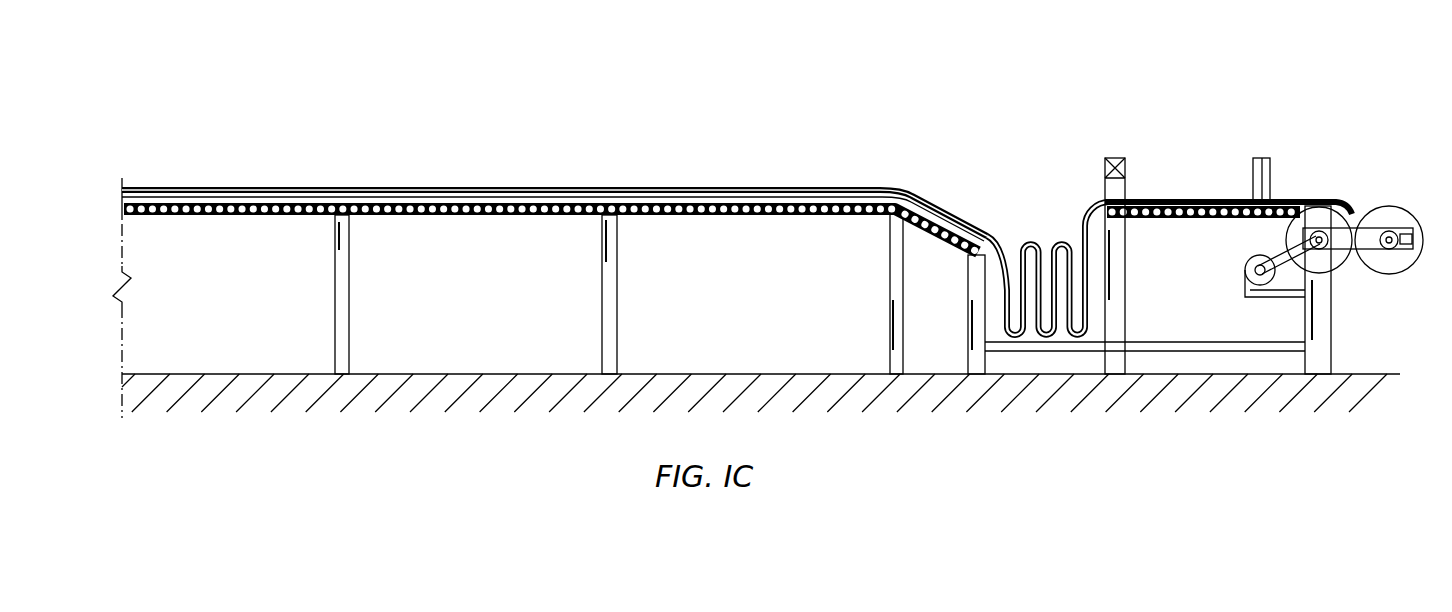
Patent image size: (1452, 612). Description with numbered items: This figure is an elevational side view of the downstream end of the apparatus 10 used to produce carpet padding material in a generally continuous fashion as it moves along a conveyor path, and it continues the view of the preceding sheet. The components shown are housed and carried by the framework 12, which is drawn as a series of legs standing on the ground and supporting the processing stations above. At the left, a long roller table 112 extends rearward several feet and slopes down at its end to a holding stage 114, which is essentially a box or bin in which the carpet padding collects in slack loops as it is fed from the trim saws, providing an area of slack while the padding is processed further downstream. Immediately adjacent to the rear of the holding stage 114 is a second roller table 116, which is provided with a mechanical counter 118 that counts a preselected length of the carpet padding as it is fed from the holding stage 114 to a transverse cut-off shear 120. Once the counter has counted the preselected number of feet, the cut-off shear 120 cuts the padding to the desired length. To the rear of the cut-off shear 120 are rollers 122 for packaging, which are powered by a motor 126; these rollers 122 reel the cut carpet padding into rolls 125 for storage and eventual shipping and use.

The apparatus 10 is at (593, 128).
The framework 12 is at (612, 302).
The roller table 112 is at (647, 202).
The holding stage 114 is at (1045, 238).
The second roller table 116 is at (1208, 208).
The mechanical counter 118 is at (1125, 163).
The transverse cut-off shear 120 is at (1273, 170).
The rollers 122 is at (1333, 216).
The rolls 125 is at (1390, 265).
The motor 126 is at (1243, 263).